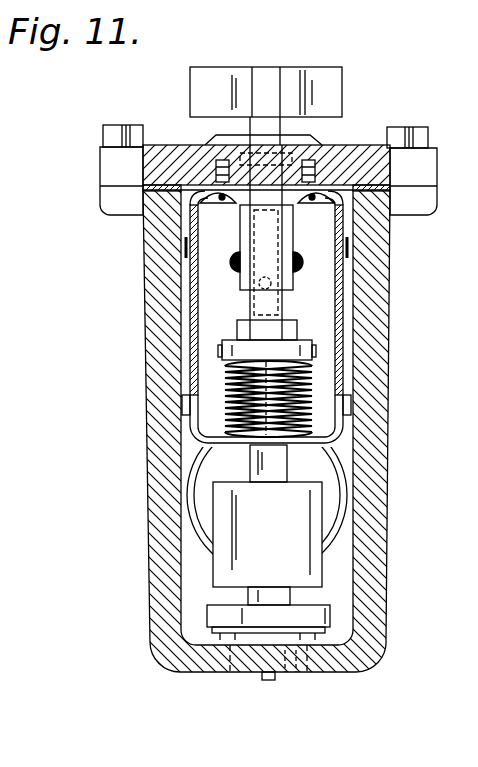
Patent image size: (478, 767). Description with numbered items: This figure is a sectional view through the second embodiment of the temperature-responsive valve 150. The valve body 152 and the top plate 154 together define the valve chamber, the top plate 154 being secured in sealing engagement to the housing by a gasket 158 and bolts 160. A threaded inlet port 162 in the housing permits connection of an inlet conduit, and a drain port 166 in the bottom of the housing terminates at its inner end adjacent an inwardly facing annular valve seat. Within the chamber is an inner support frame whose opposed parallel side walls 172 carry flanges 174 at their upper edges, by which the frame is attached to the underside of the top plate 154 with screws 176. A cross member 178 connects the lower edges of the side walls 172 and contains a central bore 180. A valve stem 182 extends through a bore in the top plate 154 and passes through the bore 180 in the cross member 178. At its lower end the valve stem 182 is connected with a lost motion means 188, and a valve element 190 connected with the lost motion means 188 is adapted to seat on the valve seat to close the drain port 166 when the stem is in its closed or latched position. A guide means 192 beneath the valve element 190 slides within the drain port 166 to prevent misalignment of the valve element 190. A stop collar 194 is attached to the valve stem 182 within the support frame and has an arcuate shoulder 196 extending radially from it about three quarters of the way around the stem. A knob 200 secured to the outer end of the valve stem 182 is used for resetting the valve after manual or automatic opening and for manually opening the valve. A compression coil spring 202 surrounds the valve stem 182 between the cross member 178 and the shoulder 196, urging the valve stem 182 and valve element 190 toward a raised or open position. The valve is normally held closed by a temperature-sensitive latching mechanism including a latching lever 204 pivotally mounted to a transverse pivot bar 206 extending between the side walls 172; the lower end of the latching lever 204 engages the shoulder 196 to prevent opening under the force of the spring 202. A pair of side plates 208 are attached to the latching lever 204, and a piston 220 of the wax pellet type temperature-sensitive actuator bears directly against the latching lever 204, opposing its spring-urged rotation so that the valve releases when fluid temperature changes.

The valve 150 is at (266, 461).
The valve body 152 is at (162, 403).
The top plate 154 is at (100, 153).
The gasket 158 is at (143, 187).
The bolts 160 is at (120, 130).
The threaded inlet port 162 is at (205, 507).
The drain port 166 is at (290, 676).
The side walls 172 is at (245, 317).
The flanges 174 is at (210, 192).
The screws 176 is at (200, 198).
The cross member 178 is at (300, 463).
The central bore 180 is at (258, 447).
The valve stem 182 is at (235, 113).
The lost motion means 188 is at (278, 533).
The valve element 190 is at (212, 615).
The guide means 192 is at (268, 682).
The stop collar 194 is at (310, 333).
The arcuate shoulder 196 is at (228, 345).
The knob 200 is at (268, 66).
The compression coil spring 202 is at (320, 395).
The latching lever 204 is at (250, 305).
The transverse pivot bar 206 is at (190, 237).
The side plates 208 is at (240, 278).
The piston 220 is at (278, 283).